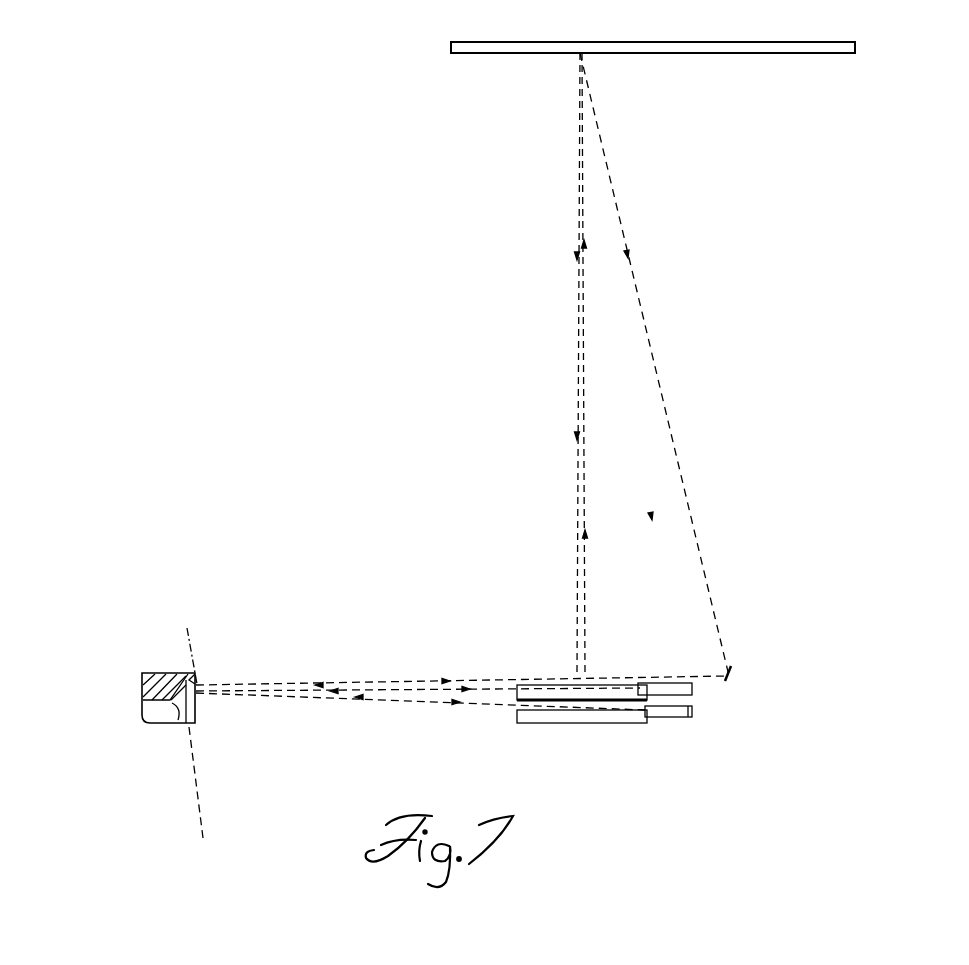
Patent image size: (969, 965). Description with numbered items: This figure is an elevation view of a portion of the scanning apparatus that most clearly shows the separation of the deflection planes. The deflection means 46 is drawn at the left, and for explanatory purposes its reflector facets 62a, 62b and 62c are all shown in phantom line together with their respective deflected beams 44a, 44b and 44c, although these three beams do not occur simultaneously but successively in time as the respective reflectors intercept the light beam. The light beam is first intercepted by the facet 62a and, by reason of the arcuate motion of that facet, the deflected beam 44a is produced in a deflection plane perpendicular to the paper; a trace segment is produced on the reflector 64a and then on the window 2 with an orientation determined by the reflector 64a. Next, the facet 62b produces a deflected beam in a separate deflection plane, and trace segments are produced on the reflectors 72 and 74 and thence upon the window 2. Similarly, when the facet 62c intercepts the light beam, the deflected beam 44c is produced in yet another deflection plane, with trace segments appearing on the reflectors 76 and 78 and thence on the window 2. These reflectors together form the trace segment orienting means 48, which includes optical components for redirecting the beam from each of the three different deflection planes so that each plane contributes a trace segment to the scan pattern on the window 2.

The window 2 is at (707, 50).
The deflected beam 44a is at (689, 511).
The deflected beam 44b is at (578, 440).
The deflected beam 44c is at (584, 476).
The deflection means 46 is at (141, 669).
The trace segment orienting means 48 is at (545, 620).
The reflector facet 62a is at (177, 706).
The reflector facet 62b is at (186, 721).
The reflector facet 62c is at (205, 678).
The reflector 64a is at (735, 680).
The reflector 72 is at (693, 690).
The reflector 74 is at (522, 688).
The reflector 76 is at (676, 706).
The reflector 78 is at (541, 716).